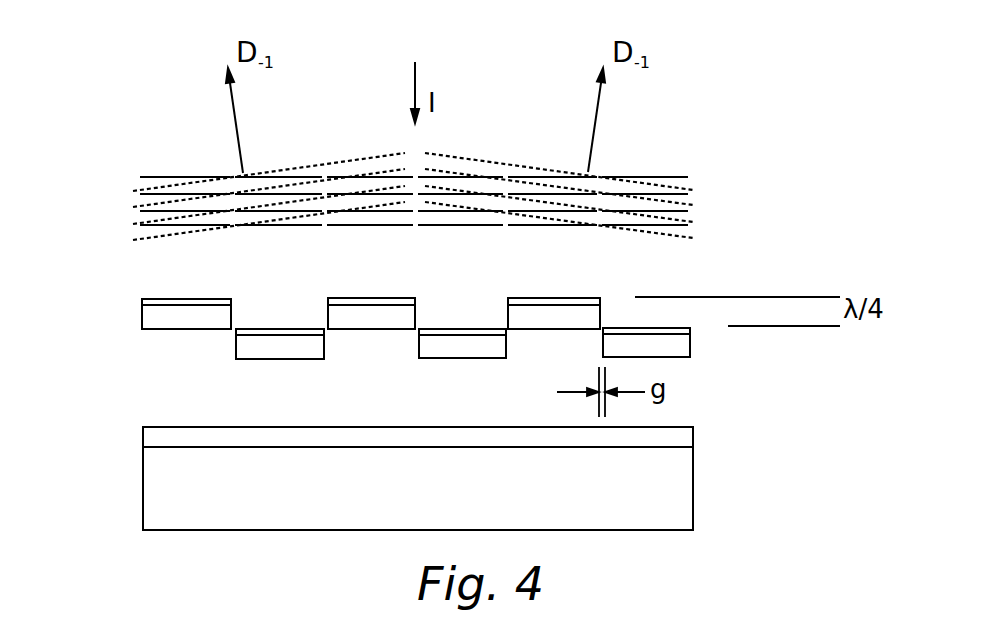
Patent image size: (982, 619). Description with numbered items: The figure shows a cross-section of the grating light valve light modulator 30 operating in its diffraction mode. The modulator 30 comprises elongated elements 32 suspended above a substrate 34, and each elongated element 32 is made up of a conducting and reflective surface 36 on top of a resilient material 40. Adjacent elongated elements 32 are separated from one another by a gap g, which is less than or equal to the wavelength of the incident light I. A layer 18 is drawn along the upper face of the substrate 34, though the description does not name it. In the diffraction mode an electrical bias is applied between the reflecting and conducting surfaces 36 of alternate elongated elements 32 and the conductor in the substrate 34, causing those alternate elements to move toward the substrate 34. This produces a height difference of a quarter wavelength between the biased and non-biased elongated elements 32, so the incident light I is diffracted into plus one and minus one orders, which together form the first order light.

The grating light valve light modulator 30 is at (690, 155).
The elongated elements 32 is at (176, 344).
The substrate 34 is at (461, 495).
The conducting and reflective surface 36 is at (153, 298).
The resilient material 40 is at (140, 317).
The substrate layer 18 is at (693, 433).